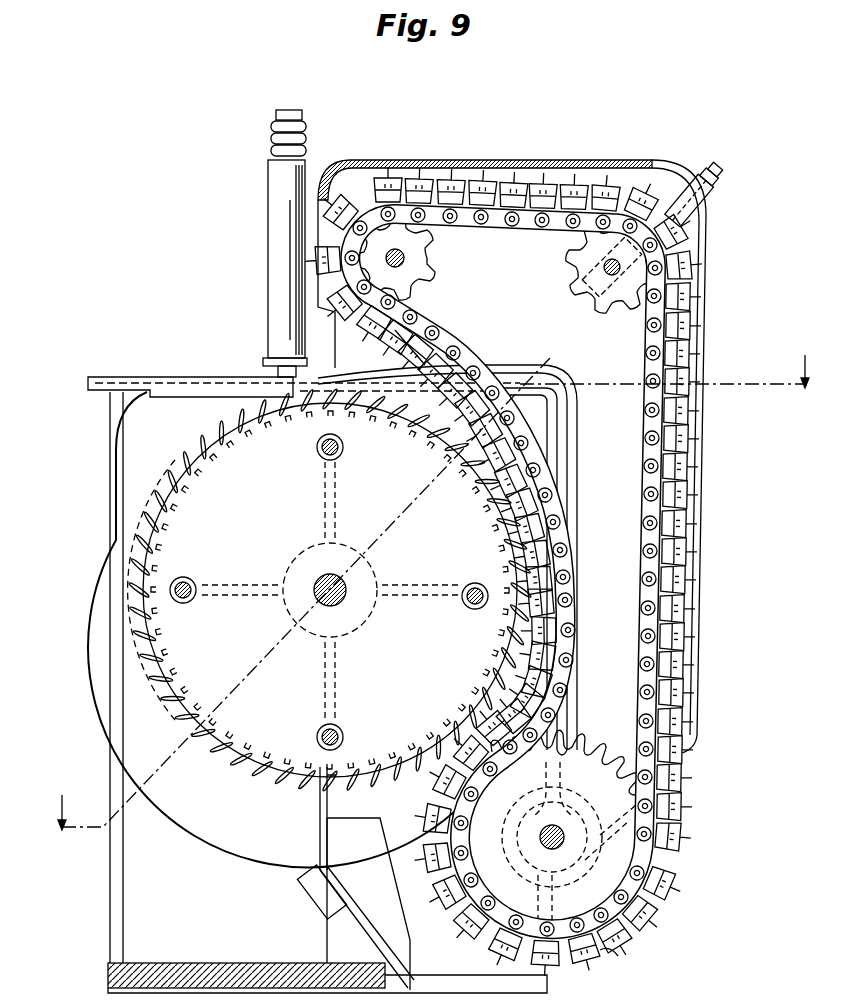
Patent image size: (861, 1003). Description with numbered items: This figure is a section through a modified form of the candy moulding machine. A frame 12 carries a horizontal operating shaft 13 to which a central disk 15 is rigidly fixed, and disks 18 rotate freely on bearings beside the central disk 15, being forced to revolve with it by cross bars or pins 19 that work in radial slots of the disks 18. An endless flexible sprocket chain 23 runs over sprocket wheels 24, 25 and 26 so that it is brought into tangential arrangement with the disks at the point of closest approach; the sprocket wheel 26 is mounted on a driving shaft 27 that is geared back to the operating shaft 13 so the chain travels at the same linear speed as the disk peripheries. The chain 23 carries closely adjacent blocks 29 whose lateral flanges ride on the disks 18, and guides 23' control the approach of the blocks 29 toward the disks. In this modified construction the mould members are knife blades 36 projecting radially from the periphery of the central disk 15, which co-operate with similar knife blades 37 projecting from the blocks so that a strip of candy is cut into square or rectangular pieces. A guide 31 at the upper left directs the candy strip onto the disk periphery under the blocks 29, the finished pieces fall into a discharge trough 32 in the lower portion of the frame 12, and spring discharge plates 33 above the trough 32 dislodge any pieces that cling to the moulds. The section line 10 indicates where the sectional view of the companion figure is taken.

The section line 10- 10 is at (431, 583).
The frame 12 is at (417, 576).
The operating shaft 13 is at (342, 585).
The central disk 15 is at (268, 668).
The disks 18 is at (145, 489).
The cross bars or pins 19 is at (326, 458).
The sprocket chain 23 is at (447, 554).
The guides 23' is at (391, 347).
The sprocket wheel 24 is at (432, 272).
The sprocket wheel 25 is at (566, 274).
The sprocket wheel 26 is at (576, 755).
The driving shaft 27 is at (563, 838).
The blocks 29 is at (636, 938).
The guide 31 is at (108, 390).
The discharge trough 32 is at (368, 904).
The spring discharge plates 33 is at (336, 776).
The knife blades 36 is at (255, 420).
The knife blades 37 is at (445, 383).